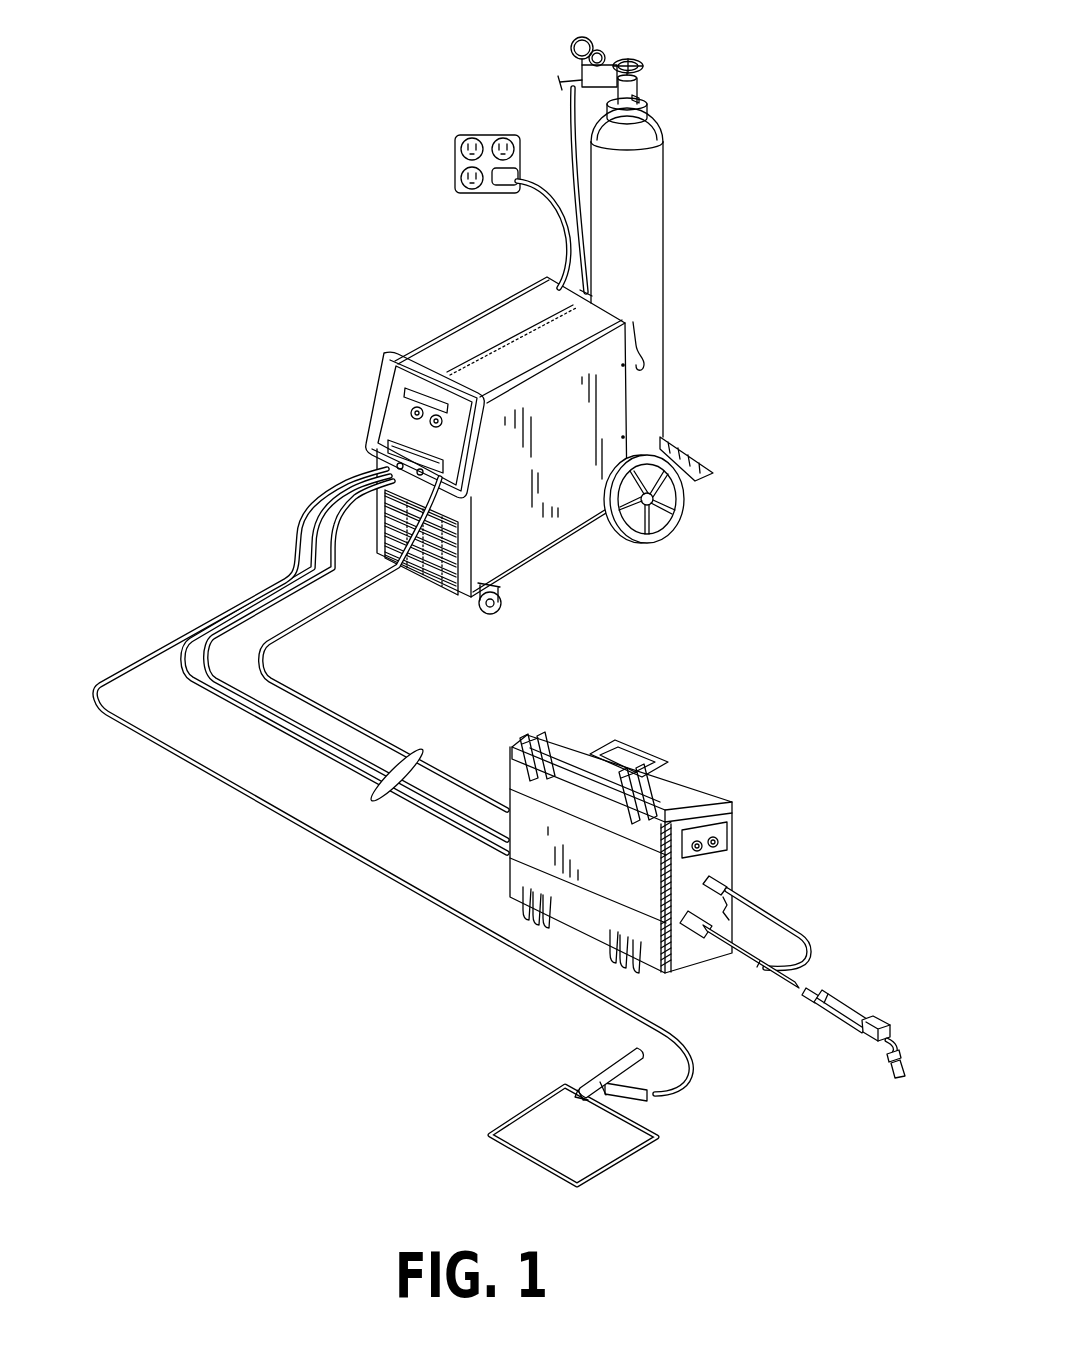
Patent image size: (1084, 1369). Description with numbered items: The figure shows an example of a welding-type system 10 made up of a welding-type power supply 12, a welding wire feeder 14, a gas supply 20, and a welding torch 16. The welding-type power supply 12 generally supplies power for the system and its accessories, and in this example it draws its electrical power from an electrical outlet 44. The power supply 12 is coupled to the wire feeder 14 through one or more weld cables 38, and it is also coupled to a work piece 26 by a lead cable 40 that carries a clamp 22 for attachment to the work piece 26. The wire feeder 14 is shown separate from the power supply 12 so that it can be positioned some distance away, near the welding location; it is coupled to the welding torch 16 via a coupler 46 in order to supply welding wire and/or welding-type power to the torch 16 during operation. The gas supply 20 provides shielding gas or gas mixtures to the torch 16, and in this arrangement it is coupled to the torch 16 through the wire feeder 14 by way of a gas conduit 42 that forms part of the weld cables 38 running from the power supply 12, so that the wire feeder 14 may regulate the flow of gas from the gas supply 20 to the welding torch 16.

The welding-type system 10 is at (322, 270).
The welding-type power supply 12 is at (522, 303).
The welding wire feeder 14 is at (688, 722).
The welding torch 16 is at (840, 1004).
The gas supply 20 is at (653, 205).
The clamp 22 is at (623, 1063).
The work piece 26 is at (595, 1143).
The weld cables 38 is at (420, 754).
The lead cable 40 is at (124, 667).
The gas conduit 42 is at (307, 698).
The electrical outlet 44 is at (457, 167).
The coupler 46 is at (746, 958).